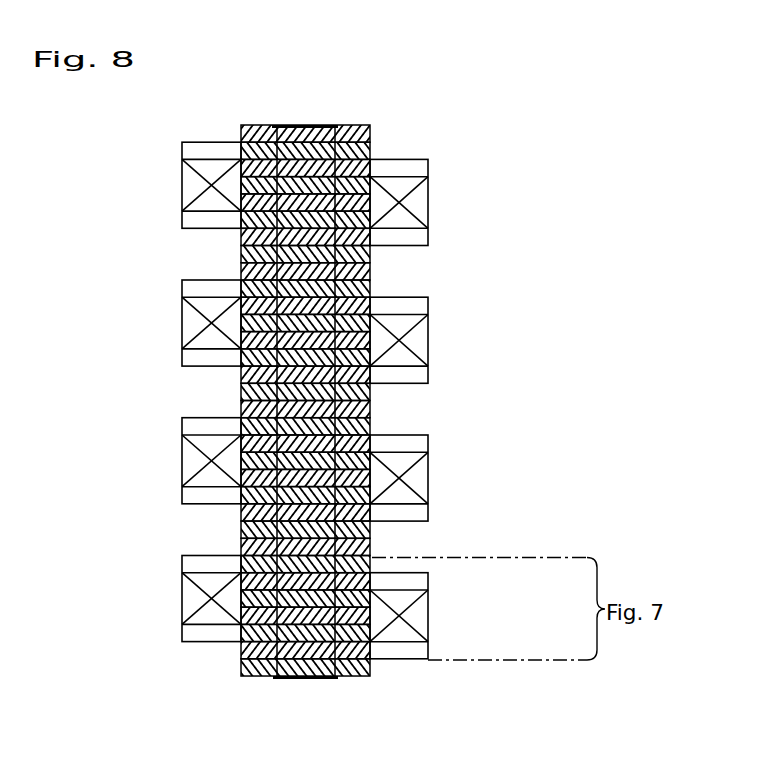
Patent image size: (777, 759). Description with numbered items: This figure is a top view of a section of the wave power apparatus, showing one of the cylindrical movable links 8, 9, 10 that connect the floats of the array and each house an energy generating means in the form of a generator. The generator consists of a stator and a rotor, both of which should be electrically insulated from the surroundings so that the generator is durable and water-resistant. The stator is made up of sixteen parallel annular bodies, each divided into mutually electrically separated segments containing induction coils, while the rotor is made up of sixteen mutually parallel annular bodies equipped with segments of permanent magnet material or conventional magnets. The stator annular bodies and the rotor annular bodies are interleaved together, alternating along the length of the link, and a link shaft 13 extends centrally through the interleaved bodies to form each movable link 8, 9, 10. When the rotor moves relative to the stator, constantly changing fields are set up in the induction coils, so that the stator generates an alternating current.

The movable link 8 is at (407, 375).
The movable link 9 is at (407, 375).
The movable link 10 is at (586, 369).
The link shaft 13 is at (310, 122).